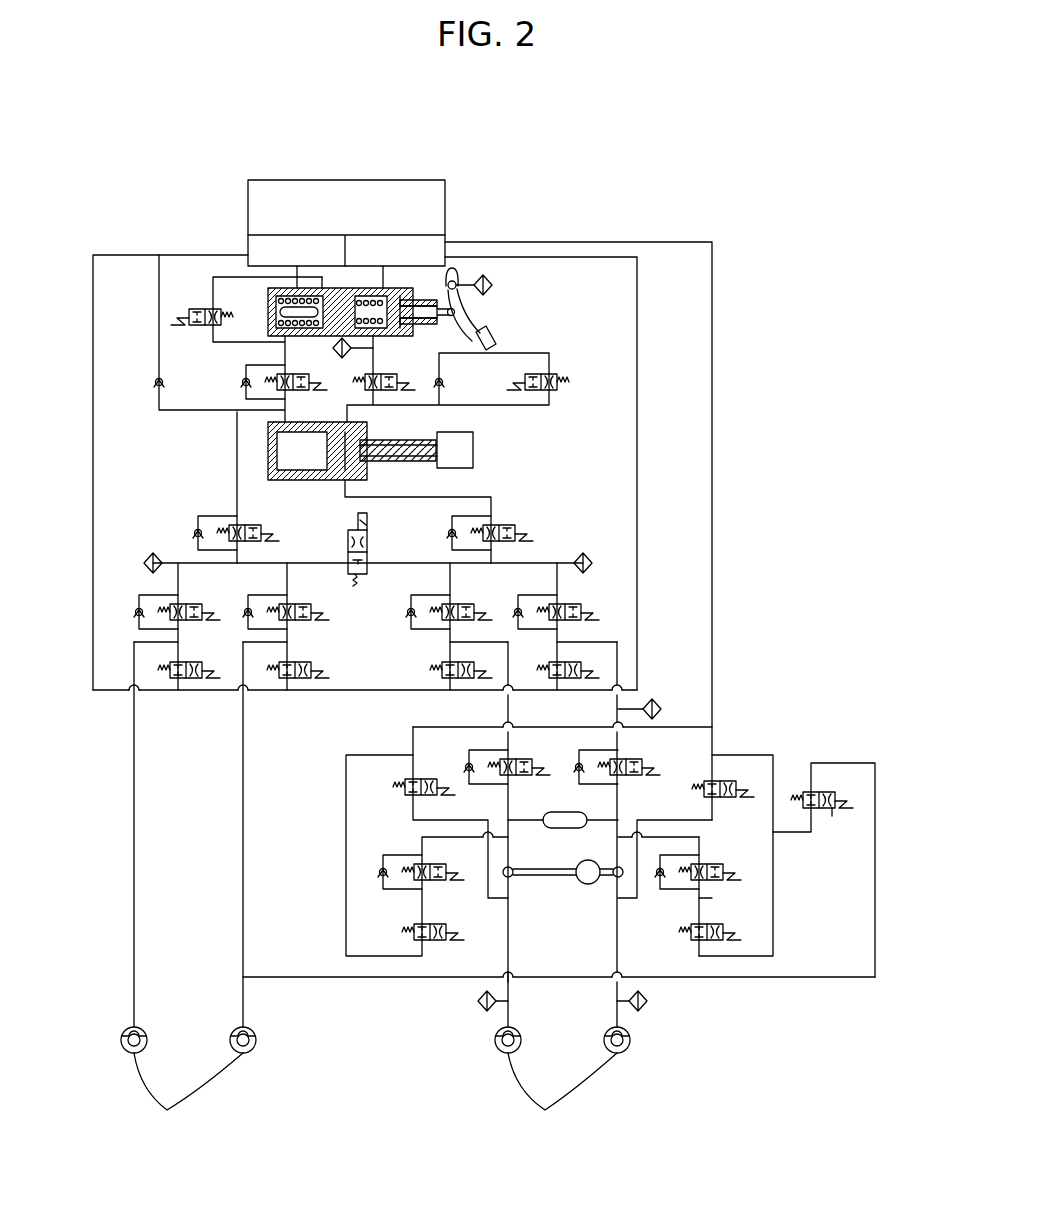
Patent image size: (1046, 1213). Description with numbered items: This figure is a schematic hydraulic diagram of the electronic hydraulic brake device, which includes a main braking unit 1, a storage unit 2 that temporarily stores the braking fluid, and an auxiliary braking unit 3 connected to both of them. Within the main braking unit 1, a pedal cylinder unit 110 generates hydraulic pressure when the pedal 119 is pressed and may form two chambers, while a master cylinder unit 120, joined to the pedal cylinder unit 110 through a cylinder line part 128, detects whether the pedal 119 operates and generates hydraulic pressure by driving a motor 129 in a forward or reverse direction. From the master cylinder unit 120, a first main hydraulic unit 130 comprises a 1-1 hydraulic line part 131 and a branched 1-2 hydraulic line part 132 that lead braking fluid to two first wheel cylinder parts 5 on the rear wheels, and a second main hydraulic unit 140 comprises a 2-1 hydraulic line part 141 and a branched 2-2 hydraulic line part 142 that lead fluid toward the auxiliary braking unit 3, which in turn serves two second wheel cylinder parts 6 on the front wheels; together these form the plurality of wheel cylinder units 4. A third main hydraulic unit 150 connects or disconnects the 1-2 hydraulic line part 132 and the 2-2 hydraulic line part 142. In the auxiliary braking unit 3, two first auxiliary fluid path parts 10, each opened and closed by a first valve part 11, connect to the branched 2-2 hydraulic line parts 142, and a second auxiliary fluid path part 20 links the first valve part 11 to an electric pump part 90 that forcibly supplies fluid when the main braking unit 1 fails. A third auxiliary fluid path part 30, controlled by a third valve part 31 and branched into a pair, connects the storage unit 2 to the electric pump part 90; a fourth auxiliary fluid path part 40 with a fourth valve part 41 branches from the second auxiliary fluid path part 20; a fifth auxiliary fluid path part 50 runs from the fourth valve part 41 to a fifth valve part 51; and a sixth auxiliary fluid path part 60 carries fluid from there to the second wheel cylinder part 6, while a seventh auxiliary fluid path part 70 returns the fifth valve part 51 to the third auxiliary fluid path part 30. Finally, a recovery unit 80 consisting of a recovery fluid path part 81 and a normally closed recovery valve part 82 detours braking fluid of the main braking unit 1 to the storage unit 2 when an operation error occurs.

The main braking unit 1 is at (142, 210).
The storage unit 2 is at (346, 166).
The auxiliary braking unit 3 is at (848, 718).
The wheel cylinder units 4 is at (544, 1138).
The first wheel cylinder parts 5 is at (188, 891).
The second wheel cylinder parts 6 is at (562, 891).
The first auxiliary fluid path part 10 is at (616, 709).
The first valve part 11 is at (655, 765).
The second auxiliary fluid path part 20 is at (620, 802).
The third auxiliary fluid path part 30 is at (713, 738).
The third valve part 31 is at (742, 780).
The fourth auxiliary fluid path part 40 is at (701, 847).
The fourth valve part 41 is at (730, 872).
The fifth auxiliary fluid path part 50 is at (700, 899).
The fifth valve part 51 is at (735, 926).
The sixth auxiliary fluid path part 60 is at (620, 950).
The seventh auxiliary fluid path part 70 is at (745, 958).
The recovery unit 80 is at (870, 1054).
The recovery fluid path part 81 is at (875, 920).
The recovery valve part 82 is at (832, 810).
The electric pump part 90 is at (587, 886).
The pedal cylinder unit 110 is at (402, 276).
The pedal 119 is at (478, 272).
The master cylinder unit 120 is at (430, 414).
The cylinder line part 128 is at (374, 357).
The motor 129 is at (474, 450).
The first main hydraulic unit 130 is at (160, 434).
The 1-1 hydraulic line part 131 is at (228, 470).
The 1-2 hydraulic line part 132 is at (168, 582).
The second main hydraulic unit 140 is at (787, 488).
The 2-1 hydraulic line part 141 is at (505, 500).
The 2-2 hydraulic line part 142 is at (575, 579).
The third main hydraulic unit 150 is at (364, 592).